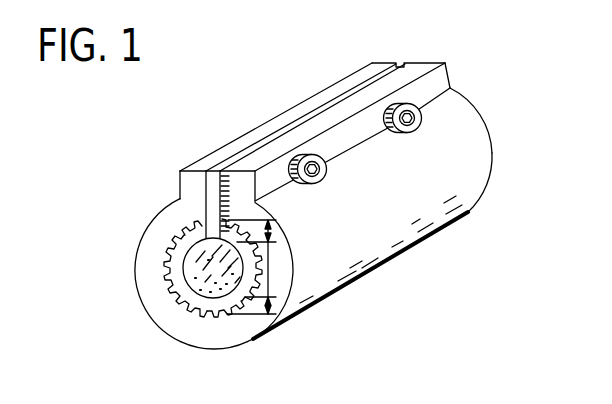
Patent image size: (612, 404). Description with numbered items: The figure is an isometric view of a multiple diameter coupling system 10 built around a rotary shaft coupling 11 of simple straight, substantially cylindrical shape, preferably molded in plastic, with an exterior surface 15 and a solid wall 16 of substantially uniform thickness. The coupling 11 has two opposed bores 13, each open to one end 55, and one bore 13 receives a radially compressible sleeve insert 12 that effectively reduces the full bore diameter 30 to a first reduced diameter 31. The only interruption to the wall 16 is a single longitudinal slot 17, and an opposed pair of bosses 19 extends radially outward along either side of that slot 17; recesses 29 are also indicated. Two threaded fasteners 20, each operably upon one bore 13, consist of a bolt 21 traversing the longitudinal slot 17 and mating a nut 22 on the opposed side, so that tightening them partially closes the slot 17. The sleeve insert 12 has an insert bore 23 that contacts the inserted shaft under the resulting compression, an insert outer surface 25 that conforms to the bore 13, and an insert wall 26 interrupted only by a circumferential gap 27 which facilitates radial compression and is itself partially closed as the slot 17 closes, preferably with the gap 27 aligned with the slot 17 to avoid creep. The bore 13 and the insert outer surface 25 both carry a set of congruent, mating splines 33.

The coupling system 10 is at (100, 172).
The coupling 11 is at (356, 286).
The sleeve insert 12 is at (184, 277).
The bore 13 is at (192, 320).
The exterior surface 15 is at (470, 178).
The wall 16 is at (223, 321).
The longitudinal slot 17 is at (403, 63).
The bosses 19 is at (337, 83).
The threaded fastener 20 is at (247, 124).
The bolt 21 is at (450, 88).
The nut 22 is at (293, 90).
The insert bore 23 is at (192, 306).
The insert outer surface 25 is at (150, 226).
The insert wall 26 is at (176, 191).
The circumferential gap 27 is at (176, 191).
The recesses 29 is at (407, 133).
The full bore diameter 30 is at (262, 325).
The first reduced diameter 31 is at (272, 267).
The spline 33 is at (172, 255).
The end 55 is at (492, 147).